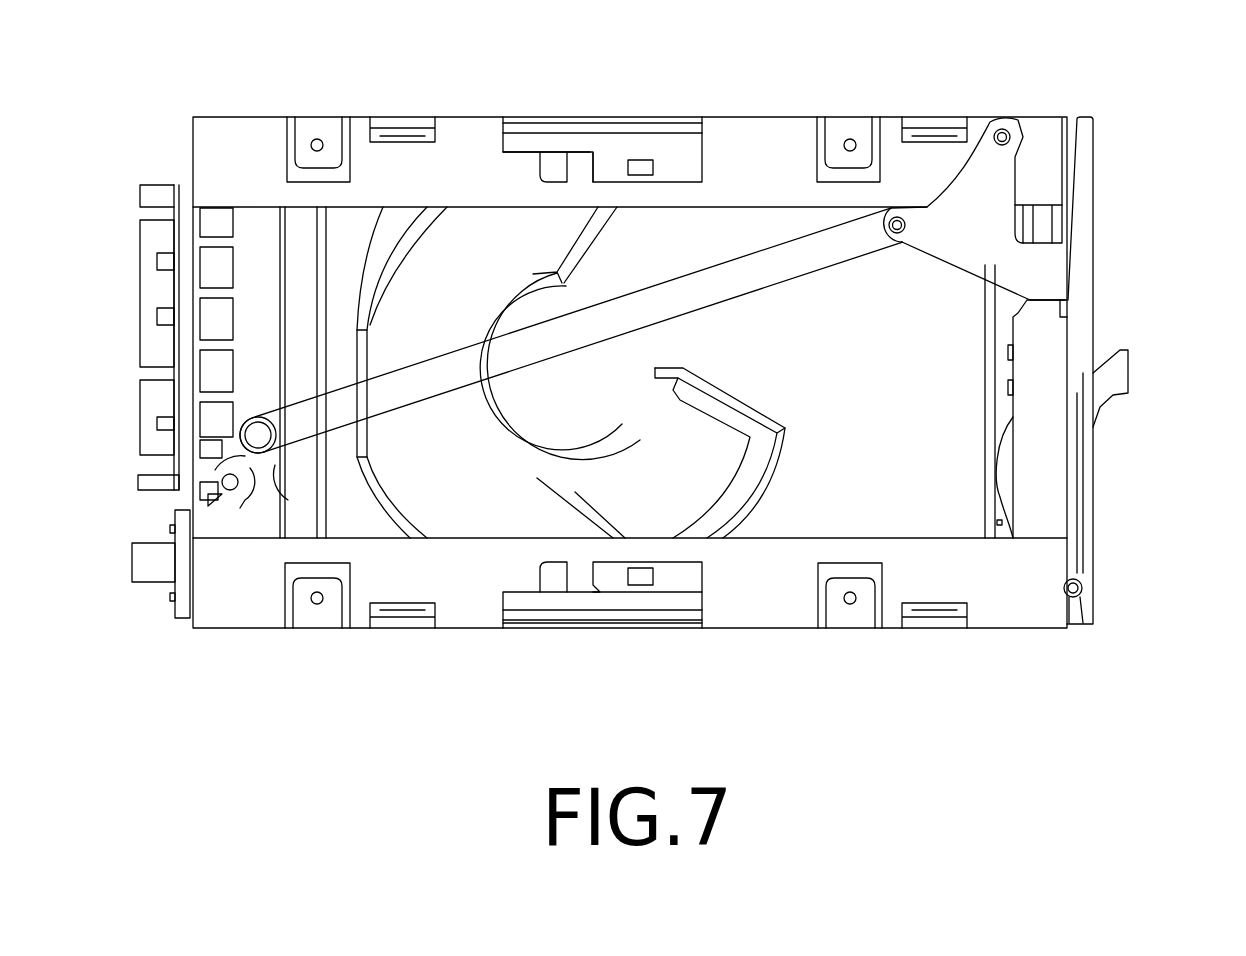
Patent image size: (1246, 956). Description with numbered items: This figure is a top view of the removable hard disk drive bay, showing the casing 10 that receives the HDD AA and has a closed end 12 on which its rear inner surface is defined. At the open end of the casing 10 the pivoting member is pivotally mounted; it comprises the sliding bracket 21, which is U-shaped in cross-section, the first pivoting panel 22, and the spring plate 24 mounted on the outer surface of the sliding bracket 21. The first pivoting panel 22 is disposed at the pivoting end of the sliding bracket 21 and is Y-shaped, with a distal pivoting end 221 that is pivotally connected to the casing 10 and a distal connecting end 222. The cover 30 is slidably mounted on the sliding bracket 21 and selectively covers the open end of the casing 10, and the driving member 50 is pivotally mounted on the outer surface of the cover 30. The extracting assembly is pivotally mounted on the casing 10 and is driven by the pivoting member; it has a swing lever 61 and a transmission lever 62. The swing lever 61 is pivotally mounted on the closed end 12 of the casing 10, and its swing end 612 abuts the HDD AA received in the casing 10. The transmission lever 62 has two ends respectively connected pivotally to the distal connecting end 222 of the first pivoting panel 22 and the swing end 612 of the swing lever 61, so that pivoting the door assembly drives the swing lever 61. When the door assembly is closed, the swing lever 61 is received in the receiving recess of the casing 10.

The casing 10 is at (790, 130).
The closed end 12 is at (255, 277).
The sliding bracket 21 is at (1048, 352).
The first pivoting panel 22 is at (998, 205).
The distal pivoting end 221 is at (1004, 135).
The distal connecting end 222 is at (897, 225).
The spring plate 24 is at (1000, 443).
The cover 30 is at (1083, 252).
The driving member 50 is at (1085, 510).
The swing lever 61 is at (265, 412).
The swing end 612 is at (258, 438).
The transmission lever 62 is at (588, 323).
The HDD AA is at (773, 525).